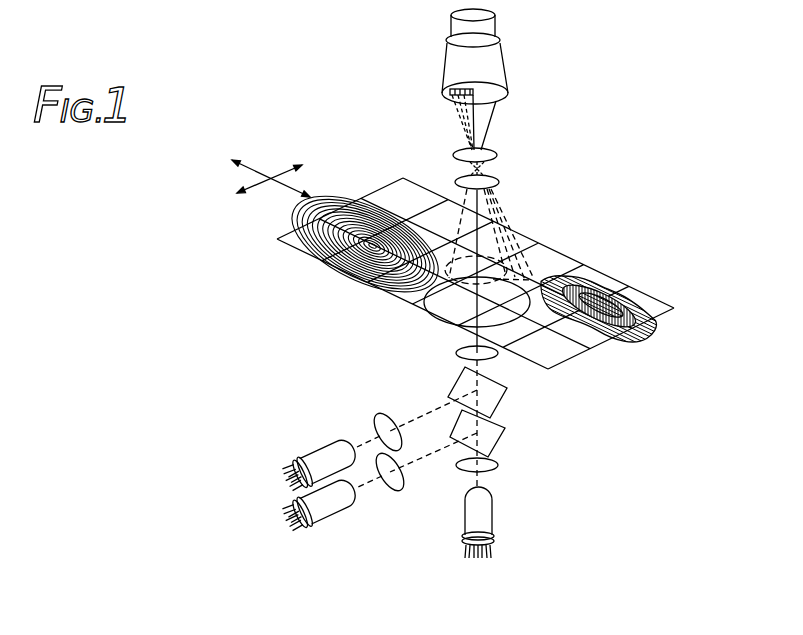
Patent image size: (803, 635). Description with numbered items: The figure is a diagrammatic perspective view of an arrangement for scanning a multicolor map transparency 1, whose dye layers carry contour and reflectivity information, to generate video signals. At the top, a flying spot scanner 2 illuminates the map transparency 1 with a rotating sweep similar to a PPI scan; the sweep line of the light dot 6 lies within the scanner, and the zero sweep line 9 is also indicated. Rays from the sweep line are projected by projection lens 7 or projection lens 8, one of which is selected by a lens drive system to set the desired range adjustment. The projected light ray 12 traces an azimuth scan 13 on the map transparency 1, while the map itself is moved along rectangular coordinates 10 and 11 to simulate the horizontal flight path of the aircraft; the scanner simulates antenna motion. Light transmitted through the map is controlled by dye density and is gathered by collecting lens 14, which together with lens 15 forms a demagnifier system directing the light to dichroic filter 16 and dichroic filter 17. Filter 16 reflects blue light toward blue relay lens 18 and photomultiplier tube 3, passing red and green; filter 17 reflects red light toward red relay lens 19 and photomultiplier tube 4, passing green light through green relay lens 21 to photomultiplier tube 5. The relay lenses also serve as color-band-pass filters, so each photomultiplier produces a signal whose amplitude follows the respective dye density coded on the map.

The map transparency 1 is at (643, 322).
The flying spot scanner 2 is at (498, 64).
The photomultiplier tube 3 is at (323, 455).
The photomultiplier tube 4 is at (332, 507).
The photomultiplier tube 5 is at (484, 525).
The sweep line of the light dot 6 is at (452, 91).
The projection lens 7 is at (497, 153).
The projection lens 8 is at (499, 183).
The zero sweep line 9 is at (478, 110).
The rectangular coordinate 10 is at (299, 190).
The rectangular coordinate 11 is at (252, 166).
The projected light ray 12 is at (500, 215).
The azimuth scan 13 is at (528, 258).
The collecting lens 14 is at (428, 316).
The lens 15 is at (458, 358).
The dichroic filter 16 is at (507, 390).
The dichroic filter 17 is at (507, 430).
The blue relay lens 18 is at (389, 414).
The red relay lens 19 is at (394, 492).
The green relay lens 21 is at (497, 470).